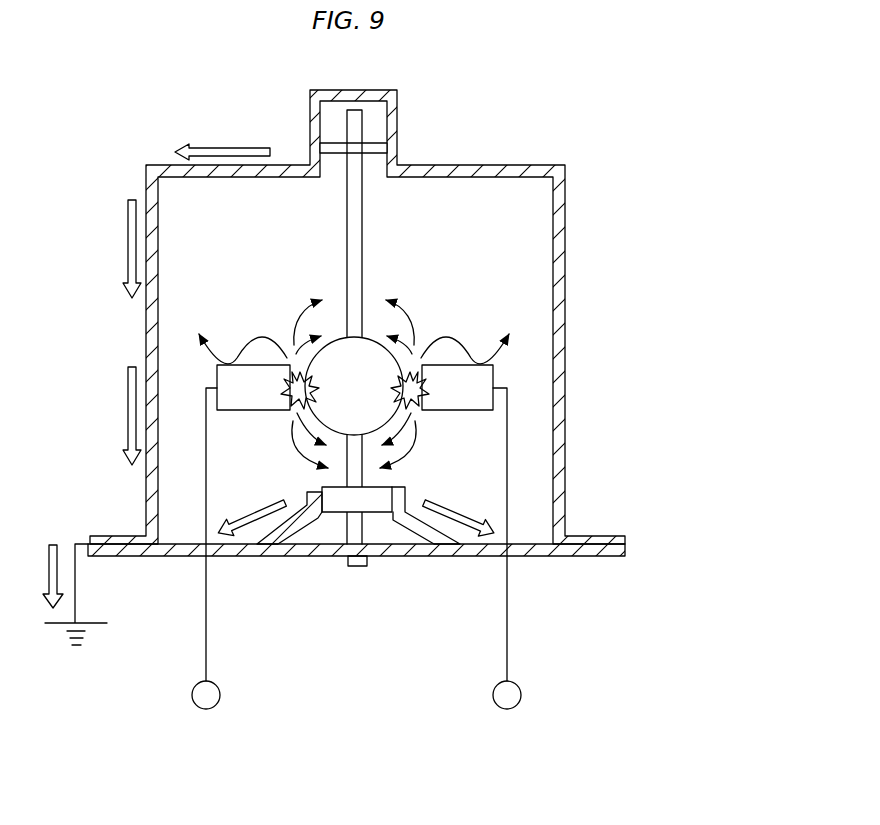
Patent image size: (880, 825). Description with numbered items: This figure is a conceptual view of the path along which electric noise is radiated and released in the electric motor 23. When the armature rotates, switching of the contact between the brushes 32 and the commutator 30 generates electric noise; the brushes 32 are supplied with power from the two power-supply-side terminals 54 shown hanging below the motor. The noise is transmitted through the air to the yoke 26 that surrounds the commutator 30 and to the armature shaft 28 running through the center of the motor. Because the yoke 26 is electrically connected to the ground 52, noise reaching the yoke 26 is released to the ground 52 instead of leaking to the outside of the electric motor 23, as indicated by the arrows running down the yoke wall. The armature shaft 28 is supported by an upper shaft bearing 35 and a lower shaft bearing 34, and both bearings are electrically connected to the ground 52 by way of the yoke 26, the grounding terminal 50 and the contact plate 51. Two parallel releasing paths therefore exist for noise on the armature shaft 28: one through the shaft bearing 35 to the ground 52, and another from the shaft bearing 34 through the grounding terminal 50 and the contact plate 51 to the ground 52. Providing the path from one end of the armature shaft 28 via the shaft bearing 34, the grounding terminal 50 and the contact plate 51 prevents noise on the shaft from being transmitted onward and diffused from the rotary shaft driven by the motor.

The electric motor 23 is at (512, 126).
The yoke 26 is at (140, 322).
The armature shaft 28 is at (361, 231).
The commutator 30 is at (378, 351).
The brushes 32 is at (250, 399).
The shaft bearing 34 is at (393, 493).
The shaft bearing 35 is at (398, 143).
The grounding terminal 50 is at (306, 495).
The contact plate 51 is at (402, 557).
The ground 52 is at (93, 622).
The power-supply-side terminals 54 is at (213, 708).